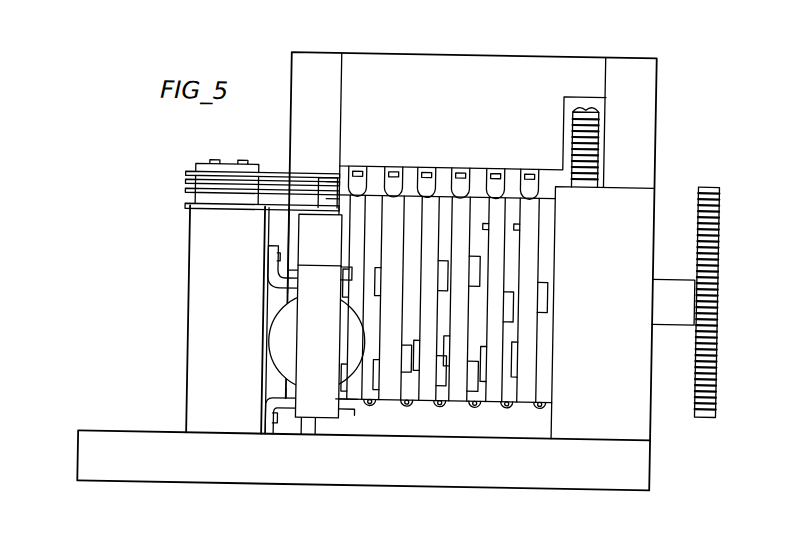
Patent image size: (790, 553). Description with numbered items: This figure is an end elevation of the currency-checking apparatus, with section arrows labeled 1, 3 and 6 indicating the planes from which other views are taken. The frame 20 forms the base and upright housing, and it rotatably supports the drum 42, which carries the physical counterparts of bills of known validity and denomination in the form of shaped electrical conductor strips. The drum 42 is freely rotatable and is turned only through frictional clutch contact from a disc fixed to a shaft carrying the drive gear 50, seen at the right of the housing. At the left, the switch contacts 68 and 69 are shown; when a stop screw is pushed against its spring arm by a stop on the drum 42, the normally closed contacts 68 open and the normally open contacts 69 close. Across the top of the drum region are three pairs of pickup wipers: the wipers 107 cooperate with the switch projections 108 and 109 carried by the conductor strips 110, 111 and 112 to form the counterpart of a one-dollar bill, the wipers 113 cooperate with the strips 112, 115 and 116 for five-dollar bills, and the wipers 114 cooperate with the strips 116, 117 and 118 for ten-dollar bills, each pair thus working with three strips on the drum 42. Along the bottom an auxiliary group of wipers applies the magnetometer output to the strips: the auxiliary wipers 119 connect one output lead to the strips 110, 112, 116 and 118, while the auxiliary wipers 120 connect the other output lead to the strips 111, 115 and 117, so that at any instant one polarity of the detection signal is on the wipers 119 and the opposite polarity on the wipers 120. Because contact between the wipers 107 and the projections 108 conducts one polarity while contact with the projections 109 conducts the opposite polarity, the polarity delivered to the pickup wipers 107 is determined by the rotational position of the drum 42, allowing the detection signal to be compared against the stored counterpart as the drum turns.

The section line 1- 1 is at (726, 86).
The section line 3- 3 is at (48, 75).
The section line 6- 6 is at (446, 72).
The frame 20 is at (645, 128).
The rotatable drum 42 is at (404, 363).
The drive gear 50 is at (702, 413).
The normally closed switch contacts 68 is at (184, 186).
The normally open contacts 69 is at (184, 209).
The electrical switch wipers 107 is at (535, 157).
The switch projections 108 is at (525, 225).
The switch projections 109 is at (522, 361).
The electrical conductor strip 110 is at (542, 390).
The electrical conductor strip 111 is at (482, 408).
The electrical conductor strip 112 is at (460, 424).
The switch wipers 113 is at (465, 157).
The switch wipers 114 is at (392, 157).
The conductor strip 115 is at (421, 423).
The conductor strip 116 is at (404, 406).
The conductor strip 117 is at (385, 406).
The conductor strip 118 is at (342, 394).
The auxiliary switch wipers 119 is at (343, 404).
The auxiliary wipers 120 is at (372, 408).